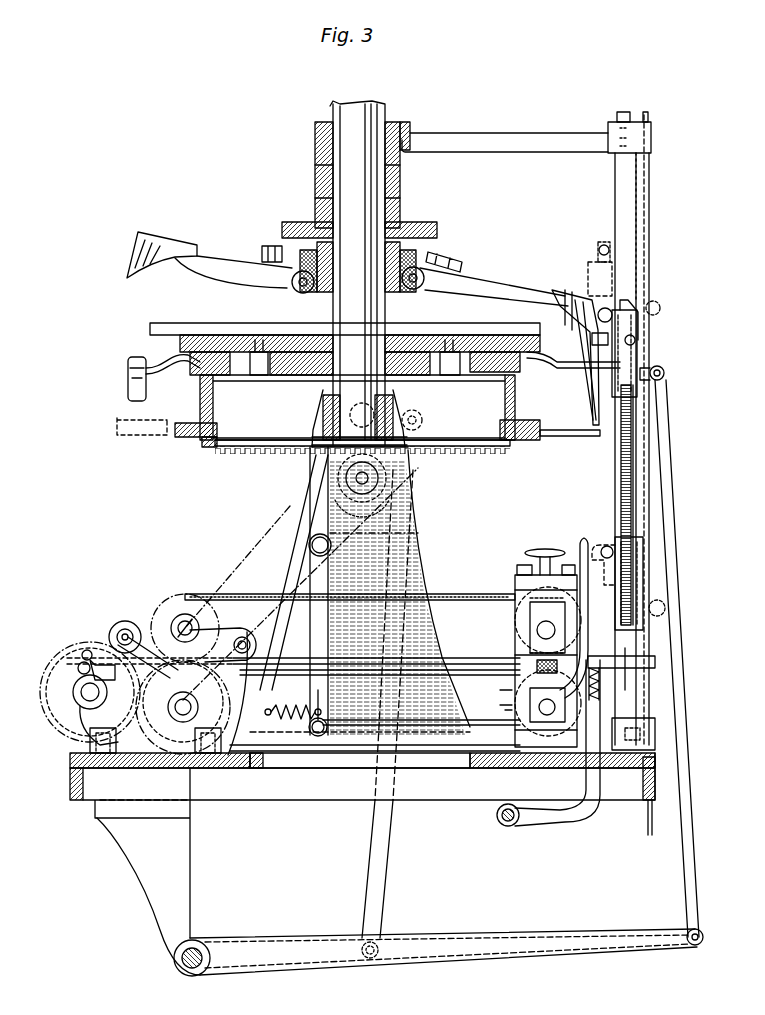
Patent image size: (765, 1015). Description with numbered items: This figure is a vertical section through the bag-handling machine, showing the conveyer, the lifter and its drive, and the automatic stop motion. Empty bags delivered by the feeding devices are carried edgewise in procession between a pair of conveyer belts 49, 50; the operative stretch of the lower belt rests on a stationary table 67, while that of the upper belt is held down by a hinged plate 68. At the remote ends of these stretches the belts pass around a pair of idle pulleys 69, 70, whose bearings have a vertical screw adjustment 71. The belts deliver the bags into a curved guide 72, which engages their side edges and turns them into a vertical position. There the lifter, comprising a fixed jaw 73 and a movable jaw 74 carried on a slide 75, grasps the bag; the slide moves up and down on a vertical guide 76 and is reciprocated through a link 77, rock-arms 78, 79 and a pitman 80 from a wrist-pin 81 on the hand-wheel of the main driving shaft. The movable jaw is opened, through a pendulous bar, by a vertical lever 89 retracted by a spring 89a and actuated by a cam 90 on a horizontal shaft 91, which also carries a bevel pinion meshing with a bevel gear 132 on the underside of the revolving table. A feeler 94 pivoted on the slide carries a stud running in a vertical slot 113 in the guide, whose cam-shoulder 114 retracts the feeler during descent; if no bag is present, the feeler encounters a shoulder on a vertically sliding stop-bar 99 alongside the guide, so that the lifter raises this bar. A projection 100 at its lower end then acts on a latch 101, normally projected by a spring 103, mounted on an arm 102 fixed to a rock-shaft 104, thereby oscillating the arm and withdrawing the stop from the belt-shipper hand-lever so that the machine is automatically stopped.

The conveyer belt 49 is at (375, 719).
The conveyer belt 50 is at (442, 594).
The stationary table 67 is at (390, 591).
The hinged plate 68 is at (453, 657).
The idle pulley 69 is at (512, 716).
The idle pulley 70 is at (512, 618).
The vertical screw adjustment 71 is at (543, 553).
The curved guide 72 is at (582, 545).
The fixed jaw 73 is at (656, 350).
The movable jaw 74 is at (574, 298).
The slide 75 is at (640, 382).
The vertical guide 76 is at (624, 222).
The link 77 is at (692, 823).
The rock-arm 78 is at (485, 940).
The rock-arm 79 is at (305, 950).
The pitman 80 is at (387, 870).
The wrist-pin 81 is at (422, 418).
The vertical lever 89 is at (306, 514).
The spring 89a is at (296, 700).
The cam 90 is at (380, 479).
The horizontal shaft 91 is at (312, 465).
The feeler 94 is at (600, 372).
The stop-bar 99 is at (662, 488).
The projection 100 is at (655, 668).
The latch 101 is at (655, 656).
The arm 102 is at (595, 815).
The spring 103 is at (603, 684).
The rock-shaft 104 is at (511, 827).
The vertical slot 113 is at (605, 505).
The cam-shoulder 114 is at (621, 420).
The bevel gear 132 is at (240, 452).